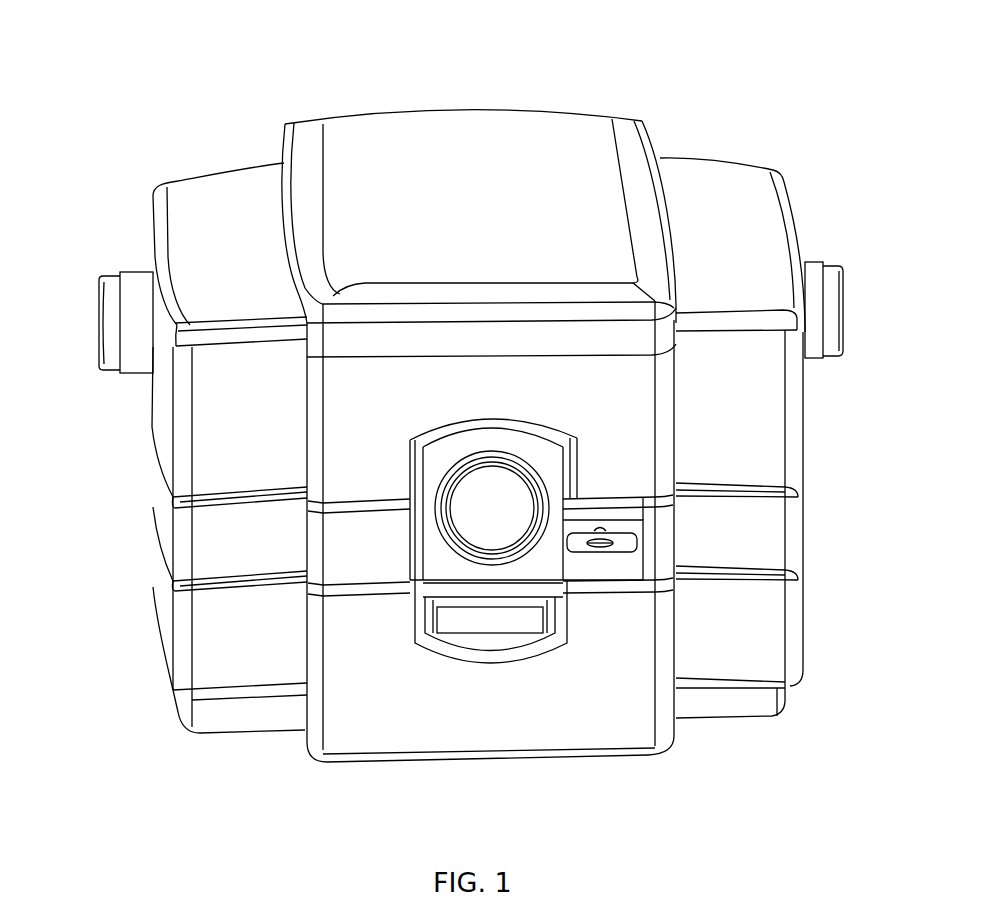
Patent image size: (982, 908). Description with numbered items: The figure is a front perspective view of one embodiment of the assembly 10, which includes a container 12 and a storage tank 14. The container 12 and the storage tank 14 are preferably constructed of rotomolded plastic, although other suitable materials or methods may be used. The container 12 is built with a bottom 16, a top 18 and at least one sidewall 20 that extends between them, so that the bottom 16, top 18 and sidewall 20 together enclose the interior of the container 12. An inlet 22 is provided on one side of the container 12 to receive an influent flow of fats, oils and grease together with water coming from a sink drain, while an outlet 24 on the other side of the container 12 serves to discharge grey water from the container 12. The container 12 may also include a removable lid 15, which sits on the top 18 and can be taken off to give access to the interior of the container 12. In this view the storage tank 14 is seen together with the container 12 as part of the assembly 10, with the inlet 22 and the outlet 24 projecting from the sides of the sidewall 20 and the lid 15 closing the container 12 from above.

The assembly 10 is at (256, 82).
The container 12 is at (260, 422).
The storage tank 14 is at (607, 702).
The removable lid 15 is at (500, 205).
The bottom 16 is at (233, 735).
The top 18 is at (697, 173).
The sidewall 20 is at (157, 477).
The inlet 22 is at (98, 326).
The outlet 24 is at (842, 289).